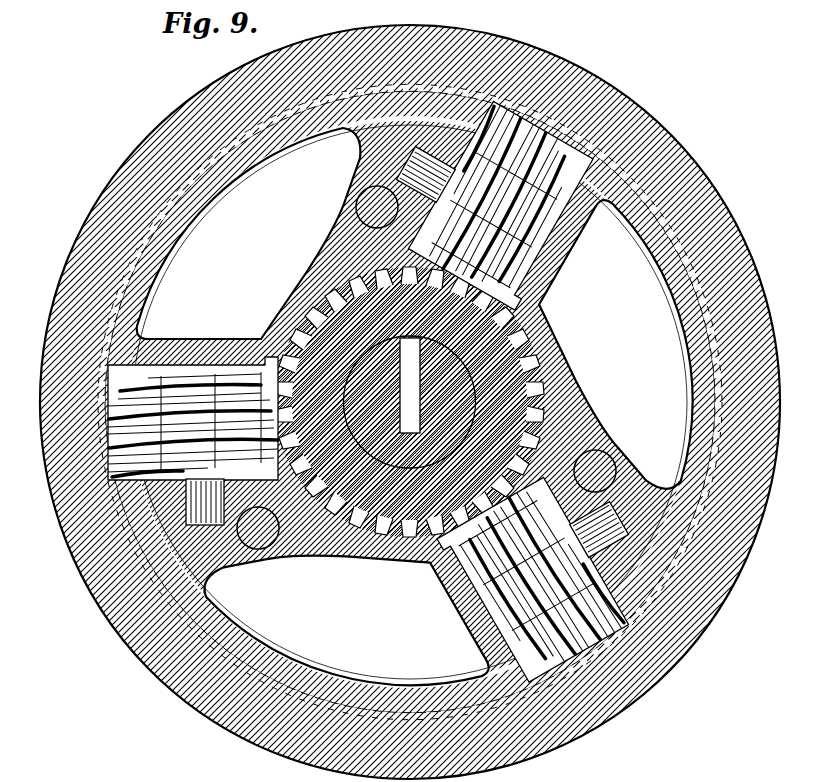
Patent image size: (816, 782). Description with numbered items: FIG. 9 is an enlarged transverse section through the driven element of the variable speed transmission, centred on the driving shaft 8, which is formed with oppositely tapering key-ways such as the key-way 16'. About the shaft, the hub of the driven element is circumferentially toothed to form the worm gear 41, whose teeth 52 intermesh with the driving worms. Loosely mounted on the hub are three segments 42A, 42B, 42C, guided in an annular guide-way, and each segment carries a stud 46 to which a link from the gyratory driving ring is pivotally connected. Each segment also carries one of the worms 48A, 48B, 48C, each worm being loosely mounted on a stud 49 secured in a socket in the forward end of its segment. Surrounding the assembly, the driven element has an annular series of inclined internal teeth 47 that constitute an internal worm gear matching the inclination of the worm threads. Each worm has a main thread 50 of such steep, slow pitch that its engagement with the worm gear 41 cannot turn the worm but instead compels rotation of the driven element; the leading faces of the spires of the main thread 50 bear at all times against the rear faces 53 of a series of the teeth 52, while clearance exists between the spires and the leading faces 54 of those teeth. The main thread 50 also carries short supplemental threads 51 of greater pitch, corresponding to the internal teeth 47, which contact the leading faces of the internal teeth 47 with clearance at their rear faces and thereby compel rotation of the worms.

The driving shaft 8 is at (520, 360).
The key-way 16' is at (410, 402).
The worm gear 41 is at (360, 550).
The segment 42A is at (240, 147).
The segment 42B is at (673, 282).
The segment 42C is at (252, 733).
The stud 46 is at (350, 217).
The internal teeth 47 is at (617, 618).
The worm 48A is at (612, 128).
The worm 48B is at (580, 660).
The worm 48C is at (80, 540).
The stud 49 is at (157, 370).
The main thread 50 is at (193, 377).
The supplemental thread 51 is at (217, 390).
The tooth 52 is at (567, 392).
The rear face 53 is at (258, 352).
The leading face 54 is at (242, 380).